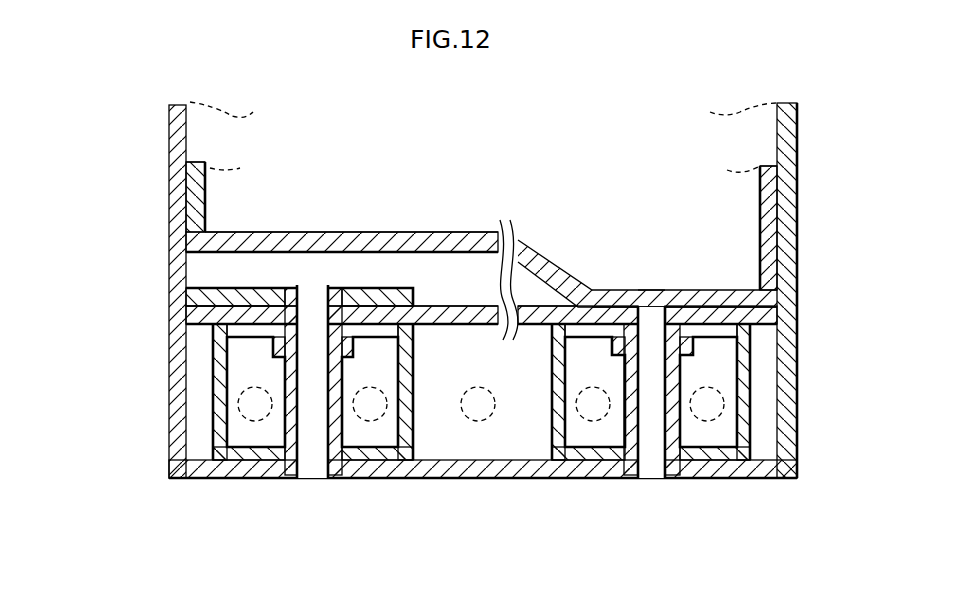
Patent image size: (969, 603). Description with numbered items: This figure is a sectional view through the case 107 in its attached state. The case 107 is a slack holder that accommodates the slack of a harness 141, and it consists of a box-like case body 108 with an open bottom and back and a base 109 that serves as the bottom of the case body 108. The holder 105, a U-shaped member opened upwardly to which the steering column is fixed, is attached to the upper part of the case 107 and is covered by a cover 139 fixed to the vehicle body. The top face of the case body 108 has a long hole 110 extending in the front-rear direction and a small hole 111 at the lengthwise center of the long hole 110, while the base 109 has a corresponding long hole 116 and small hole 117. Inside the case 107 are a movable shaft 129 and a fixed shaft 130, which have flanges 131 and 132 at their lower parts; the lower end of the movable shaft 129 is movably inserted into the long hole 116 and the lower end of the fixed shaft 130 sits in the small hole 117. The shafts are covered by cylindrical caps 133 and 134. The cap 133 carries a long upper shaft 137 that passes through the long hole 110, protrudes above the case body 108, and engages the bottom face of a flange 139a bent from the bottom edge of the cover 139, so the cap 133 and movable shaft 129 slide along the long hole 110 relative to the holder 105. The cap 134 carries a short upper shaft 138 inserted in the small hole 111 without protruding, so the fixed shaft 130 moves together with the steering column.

The holder 105 is at (437, 232).
The case 107 is at (468, 332).
The case body 108 is at (797, 352).
The base 109 is at (482, 480).
The long hole 110 is at (300, 288).
The small hole 111 is at (675, 290).
The long hole 116 is at (309, 371).
The small hole 117 is at (659, 397).
The movable shaft 129 is at (283, 427).
The fixed shaft 130 is at (617, 433).
The flange 131 is at (372, 455).
The flange 132 is at (727, 462).
The cap 133 is at (213, 410).
The cap 134 is at (750, 410).
The upper shaft 137 is at (358, 288).
The upper shaft 138 is at (608, 290).
The cover 139 is at (168, 192).
The flange 139a is at (233, 288).
The harness 141 is at (472, 390).